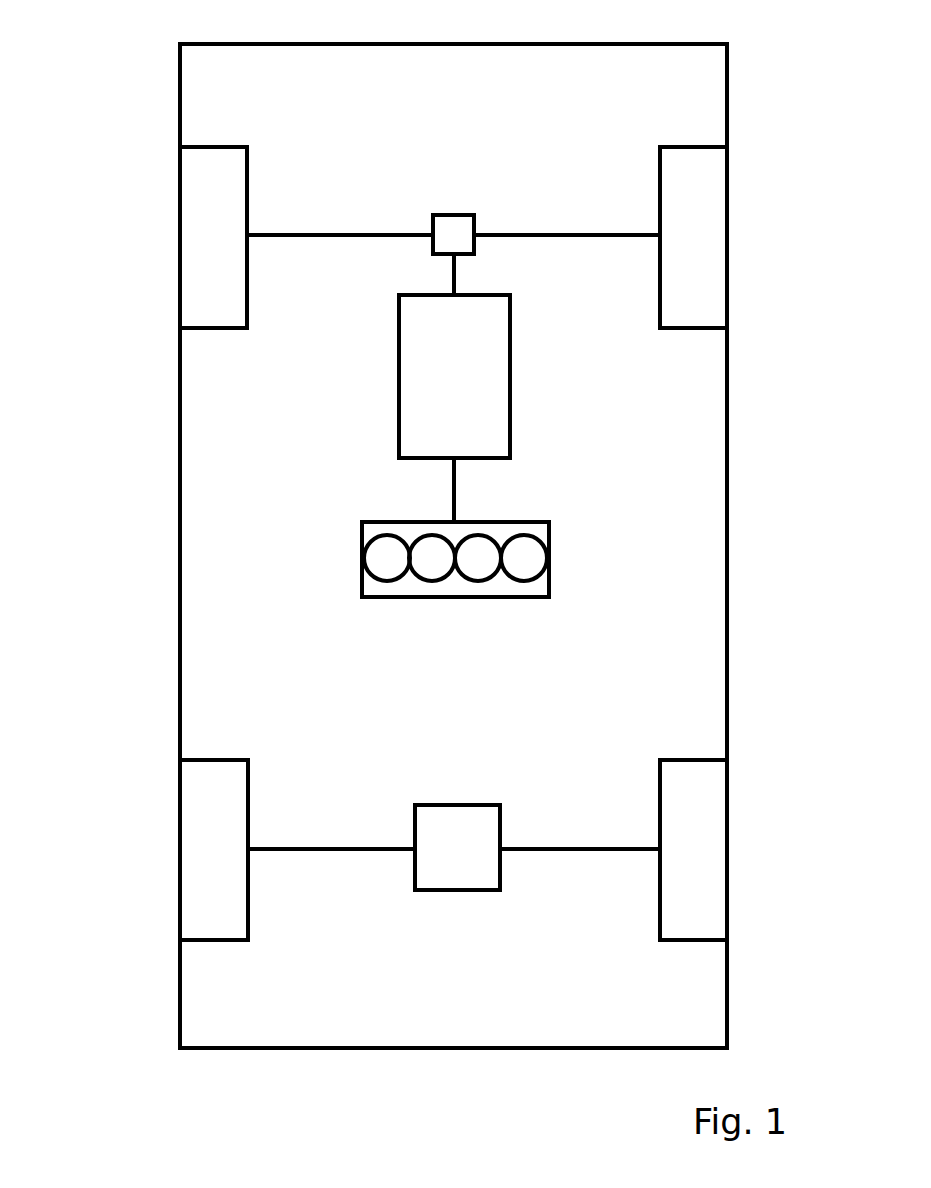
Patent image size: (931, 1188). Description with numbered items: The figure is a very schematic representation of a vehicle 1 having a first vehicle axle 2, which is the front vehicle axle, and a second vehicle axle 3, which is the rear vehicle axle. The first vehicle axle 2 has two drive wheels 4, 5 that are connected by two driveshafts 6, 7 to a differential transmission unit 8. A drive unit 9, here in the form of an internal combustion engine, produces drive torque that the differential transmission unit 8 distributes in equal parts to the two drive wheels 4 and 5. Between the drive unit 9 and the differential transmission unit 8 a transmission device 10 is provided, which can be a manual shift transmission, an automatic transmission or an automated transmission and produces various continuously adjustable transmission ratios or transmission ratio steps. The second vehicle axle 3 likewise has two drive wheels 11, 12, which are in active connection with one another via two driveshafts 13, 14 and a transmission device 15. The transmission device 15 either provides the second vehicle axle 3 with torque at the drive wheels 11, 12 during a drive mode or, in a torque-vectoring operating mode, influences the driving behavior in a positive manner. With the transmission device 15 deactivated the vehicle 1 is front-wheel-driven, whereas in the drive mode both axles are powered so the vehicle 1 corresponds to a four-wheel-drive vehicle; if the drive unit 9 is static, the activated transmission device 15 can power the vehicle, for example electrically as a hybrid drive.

The vehicle 1 is at (133, 520).
The first vehicle axle 2 is at (353, 185).
The second vehicle axle 3 is at (302, 917).
The drive wheel 4 is at (222, 217).
The drive wheel 5 is at (681, 228).
The driveshaft 6 is at (362, 236).
The driveshaft 7 is at (553, 237).
The differential transmission unit 8 is at (458, 229).
The drive unit 9 is at (432, 588).
The transmission device 10 is at (445, 390).
The drive wheel 11 is at (222, 817).
The drive wheel 12 is at (692, 824).
The driveshaft 13 is at (323, 848).
The driveshaft 14 is at (556, 847).
The transmission device 15 is at (447, 892).